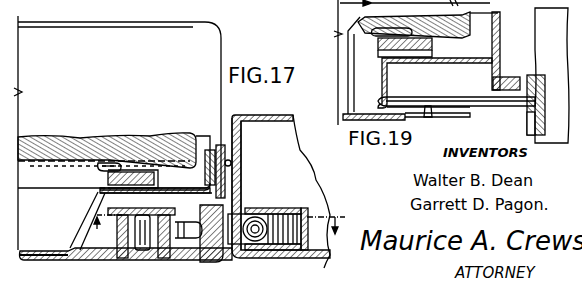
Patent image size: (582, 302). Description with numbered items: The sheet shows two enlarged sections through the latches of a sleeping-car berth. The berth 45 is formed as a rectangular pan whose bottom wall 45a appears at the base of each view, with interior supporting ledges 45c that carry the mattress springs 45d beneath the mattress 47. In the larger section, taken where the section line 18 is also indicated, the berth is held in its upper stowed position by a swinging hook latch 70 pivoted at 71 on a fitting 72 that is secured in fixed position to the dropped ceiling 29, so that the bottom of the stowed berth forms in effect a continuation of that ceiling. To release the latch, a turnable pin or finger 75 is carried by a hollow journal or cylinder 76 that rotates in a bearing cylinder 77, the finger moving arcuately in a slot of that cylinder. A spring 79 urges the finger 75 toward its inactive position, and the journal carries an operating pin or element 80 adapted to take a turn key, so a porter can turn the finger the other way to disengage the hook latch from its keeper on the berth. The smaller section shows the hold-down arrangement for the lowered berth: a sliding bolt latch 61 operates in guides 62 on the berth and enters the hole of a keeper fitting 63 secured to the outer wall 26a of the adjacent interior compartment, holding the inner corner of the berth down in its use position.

In FIG. 17, the berth 45 is at (223, 48).
In FIG. 19, the berth 45 is at (417, 62).
In FIG. 17, the bottom wall 45a is at (40, 262).
In FIG. 19, the bottom wall 45a is at (343, 121).
In FIG. 17, the interior supporting ledges 45c is at (106, 182).
In FIG. 19, the interior supporting ledges 45c is at (396, 63).
In FIG. 17, the mattress springs 45d is at (50, 172).
In FIG. 19, the mattress springs 45d is at (349, 38).
In FIG. 17, the mattress 47 is at (195, 141).
In FIG. 19, the mattress 47 is at (440, 38).
In FIG. 17, the swinging hook latch 70 is at (254, 214).
In FIG. 17, the pivot 71 is at (274, 214).
In FIG. 17, the fitting 72 is at (301, 214).
In FIG. 17, the turnable pin or finger 75 is at (197, 206).
In FIG. 17, the hollow journal or cylinder 76 is at (188, 220).
In FIG. 17, the bearing cylinder 77 is at (98, 260).
In FIG. 17, the spring 79 is at (109, 213).
In FIG. 17, the operating pin or element 80 is at (146, 245).
In FIG. 17, the dropped ceiling 29 is at (322, 255).
In FIG. 17, the section line 18- 18 is at (223, 234).
In FIG. 19, the sliding bolt latch 61 is at (480, 97).
In FIG. 19, the guides 62 is at (508, 77).
In FIG. 19, the keeper fitting 63 is at (527, 128).
In FIG. 19, the outer wall 26a is at (540, 58).